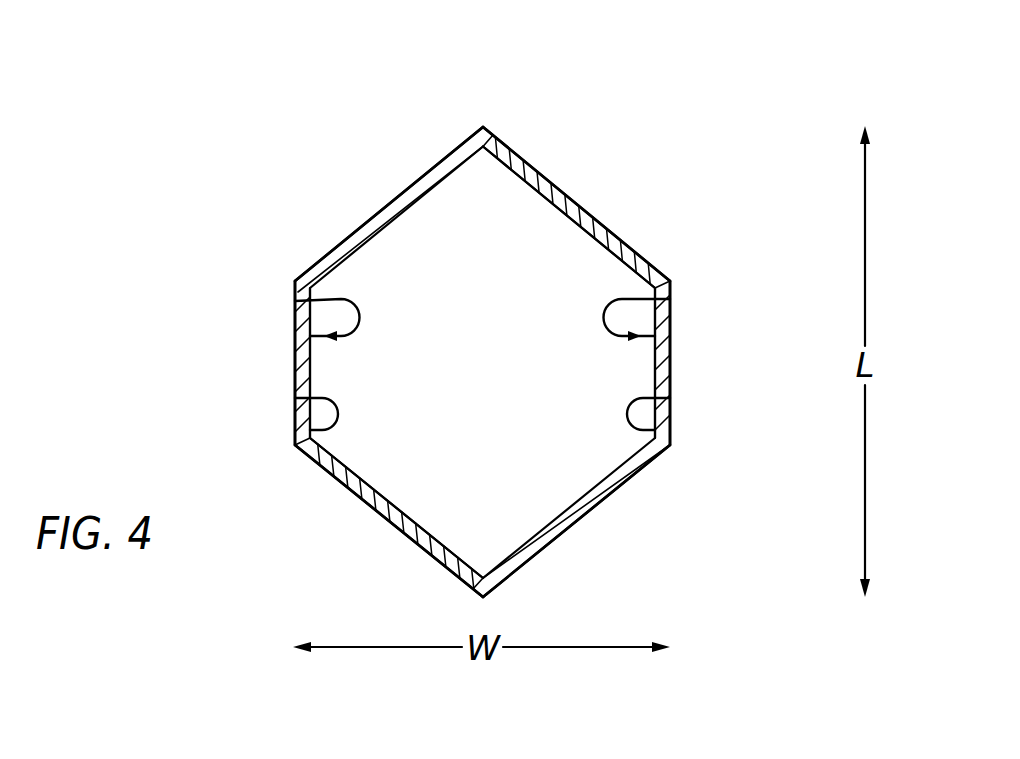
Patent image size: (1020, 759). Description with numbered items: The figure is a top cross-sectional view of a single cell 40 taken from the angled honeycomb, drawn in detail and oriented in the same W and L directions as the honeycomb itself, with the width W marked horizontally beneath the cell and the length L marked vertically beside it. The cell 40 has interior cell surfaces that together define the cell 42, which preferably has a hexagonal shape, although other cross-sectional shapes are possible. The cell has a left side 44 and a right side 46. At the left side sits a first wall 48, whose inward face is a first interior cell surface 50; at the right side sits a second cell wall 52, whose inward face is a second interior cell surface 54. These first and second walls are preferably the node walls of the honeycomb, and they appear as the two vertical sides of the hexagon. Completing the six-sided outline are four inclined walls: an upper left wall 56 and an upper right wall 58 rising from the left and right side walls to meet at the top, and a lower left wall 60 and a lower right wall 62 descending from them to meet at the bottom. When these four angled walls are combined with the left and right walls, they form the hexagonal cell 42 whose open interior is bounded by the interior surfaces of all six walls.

The cell 40 is at (608, 95).
The cell 42 is at (483, 372).
The left side 44 is at (295, 301).
The right side 46 is at (670, 299).
The first wall 48 is at (300, 357).
The first interior cell surface 50 is at (295, 398).
The second cell wall 52 is at (665, 357).
The second interior cell surface 54 is at (670, 398).
The upper left wall 56 is at (388, 212).
The upper right wall 58 is at (565, 197).
The lower left wall 60 is at (366, 497).
The lower right wall 62 is at (573, 518).